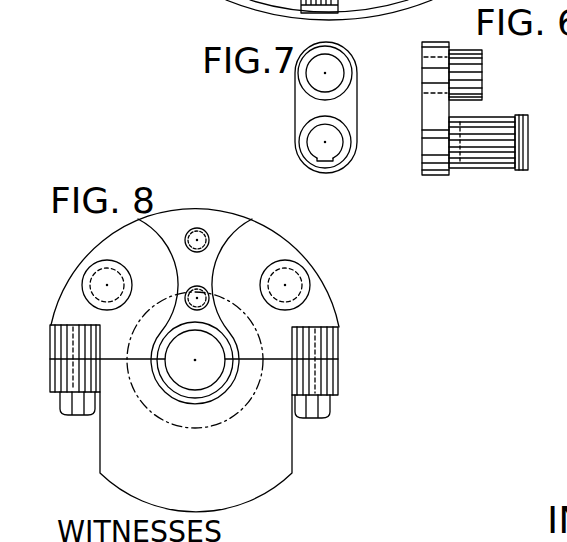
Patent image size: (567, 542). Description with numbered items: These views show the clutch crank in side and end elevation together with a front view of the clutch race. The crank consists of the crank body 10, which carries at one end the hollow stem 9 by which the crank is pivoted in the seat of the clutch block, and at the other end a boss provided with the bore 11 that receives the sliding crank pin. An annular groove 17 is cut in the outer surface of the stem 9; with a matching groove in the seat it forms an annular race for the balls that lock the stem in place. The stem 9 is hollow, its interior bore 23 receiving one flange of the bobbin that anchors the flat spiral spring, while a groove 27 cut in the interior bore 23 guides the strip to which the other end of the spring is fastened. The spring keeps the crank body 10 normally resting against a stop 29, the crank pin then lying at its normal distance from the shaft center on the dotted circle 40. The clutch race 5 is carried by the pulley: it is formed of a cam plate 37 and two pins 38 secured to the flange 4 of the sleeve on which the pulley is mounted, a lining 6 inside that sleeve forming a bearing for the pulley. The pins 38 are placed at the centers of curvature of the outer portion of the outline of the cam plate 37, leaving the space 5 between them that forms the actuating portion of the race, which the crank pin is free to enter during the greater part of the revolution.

In FIG. 8, the flange 4 is at (322, 293).
In FIG. 8, the clutch race 5 is at (195, 311).
In FIG. 8, the lining 6 is at (173, 388).
In FIG. 7, the stem 9 is at (349, 145).
In FIG. 6, the stem 9 is at (478, 170).
In FIG. 7, the crank body 10 is at (349, 109).
In FIG. 6, the crank body 10 is at (423, 98).
In FIG. 7, the bore 11 is at (337, 62).
In FIG. 6, the bore 11 is at (434, 57).
In FIG. 6, the annular groove 17 is at (518, 169).
In FIG. 7, the interior bore 23 is at (306, 143).
In FIG. 7, the groove 27 is at (324, 162).
In FIG. 6, the stop 29 is at (492, 168).
In FIG. 8, the cam plate 37 is at (214, 254).
In FIG. 8, the pins 38 is at (123, 284).
In FIG. 8, the dotted circle 40 is at (226, 418).